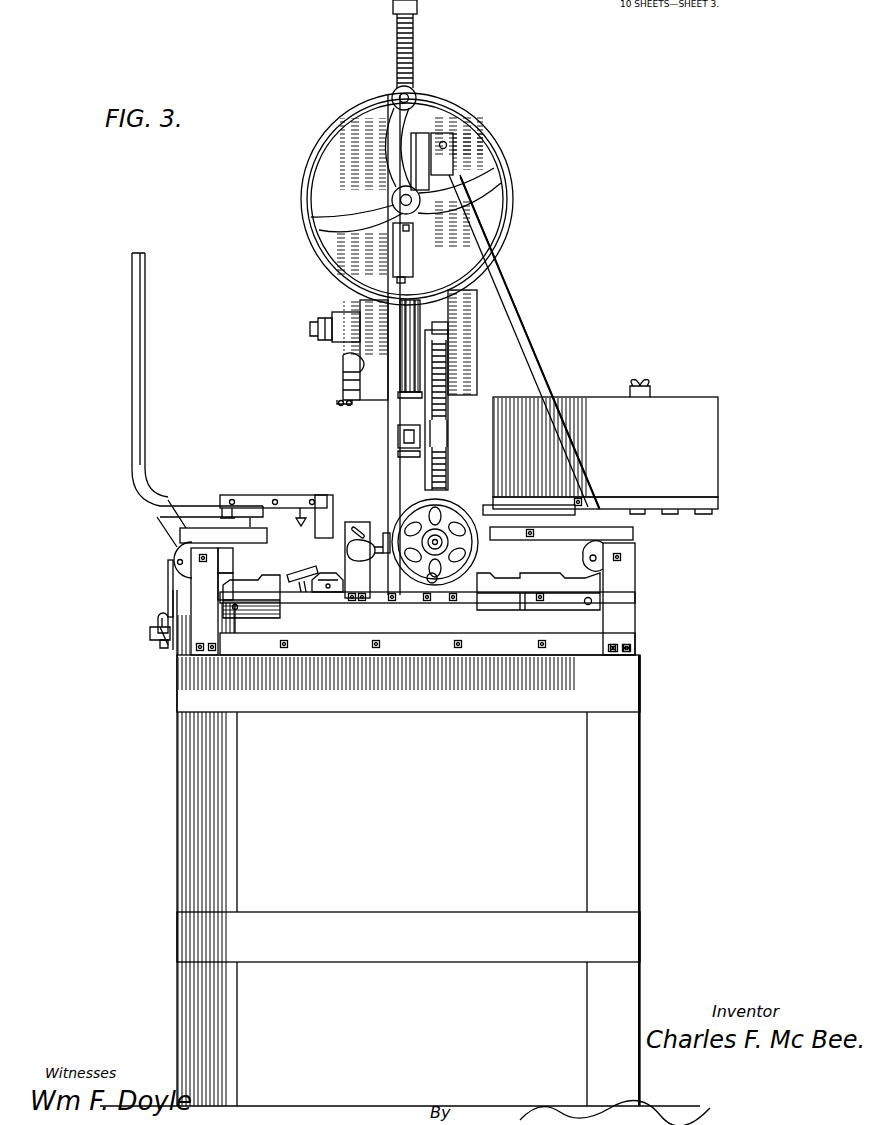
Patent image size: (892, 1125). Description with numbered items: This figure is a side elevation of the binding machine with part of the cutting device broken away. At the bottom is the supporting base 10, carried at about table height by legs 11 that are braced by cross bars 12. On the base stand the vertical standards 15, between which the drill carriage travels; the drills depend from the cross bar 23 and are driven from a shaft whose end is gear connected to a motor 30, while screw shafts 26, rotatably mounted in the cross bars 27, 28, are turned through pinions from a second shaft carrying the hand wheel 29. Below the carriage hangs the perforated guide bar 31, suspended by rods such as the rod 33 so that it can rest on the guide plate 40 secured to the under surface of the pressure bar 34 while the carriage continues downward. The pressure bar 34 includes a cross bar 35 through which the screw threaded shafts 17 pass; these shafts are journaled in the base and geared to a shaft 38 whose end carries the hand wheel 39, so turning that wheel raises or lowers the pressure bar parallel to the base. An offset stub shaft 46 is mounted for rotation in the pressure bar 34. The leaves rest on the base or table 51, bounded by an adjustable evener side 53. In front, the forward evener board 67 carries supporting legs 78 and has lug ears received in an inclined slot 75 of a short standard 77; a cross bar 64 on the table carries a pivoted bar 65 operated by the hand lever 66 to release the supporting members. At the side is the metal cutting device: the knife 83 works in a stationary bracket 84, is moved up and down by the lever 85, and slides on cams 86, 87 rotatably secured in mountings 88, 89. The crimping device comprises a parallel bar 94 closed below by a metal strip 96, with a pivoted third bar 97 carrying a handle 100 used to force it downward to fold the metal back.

The supporting base 10 is at (400, 880).
The legs 11 is at (186, 797).
The cross bars 12 is at (440, 912).
The standards 15 is at (400, 379).
The screw threaded shafts 17 is at (446, 471).
The cross bar 23 is at (410, 257).
The screw shafts 26 is at (414, 43).
The cross bar 27 is at (412, 174).
The cross bar 28 is at (413, 127).
The hand wheel 29 is at (343, 114).
The motor 30 is at (353, 362).
The guide bar 31 is at (397, 392).
The rod 33 is at (420, 364).
The pressure bar 34 is at (441, 438).
The cross bar 35 is at (470, 338).
The shaft 38 is at (447, 542).
The hand wheel 39 is at (468, 514).
The guide plate 40 is at (398, 458).
The stub shaft 46 is at (398, 438).
The base or table 51 is at (718, 497).
The evener side 53 is at (718, 439).
The cross bar 64 is at (328, 592).
The bar 65 is at (316, 568).
The hand lever 66 is at (302, 590).
The forward evener board 67 is at (268, 495).
The inclined slot 75 is at (350, 522).
The short standard 77 is at (352, 567).
The supporting legs 78 is at (220, 547).
The knife 83 is at (258, 620).
The stationary bracket 84 is at (356, 648).
The lever 85 is at (146, 381).
The cam 86 is at (172, 553).
The cam 87 is at (610, 547).
The mounting 88 is at (200, 588).
The mounting 89 is at (624, 579).
The parallel bar 94 is at (150, 637).
The metal strip 96 is at (165, 645).
The third bar 97 is at (160, 608).
The handle 100 is at (168, 570).